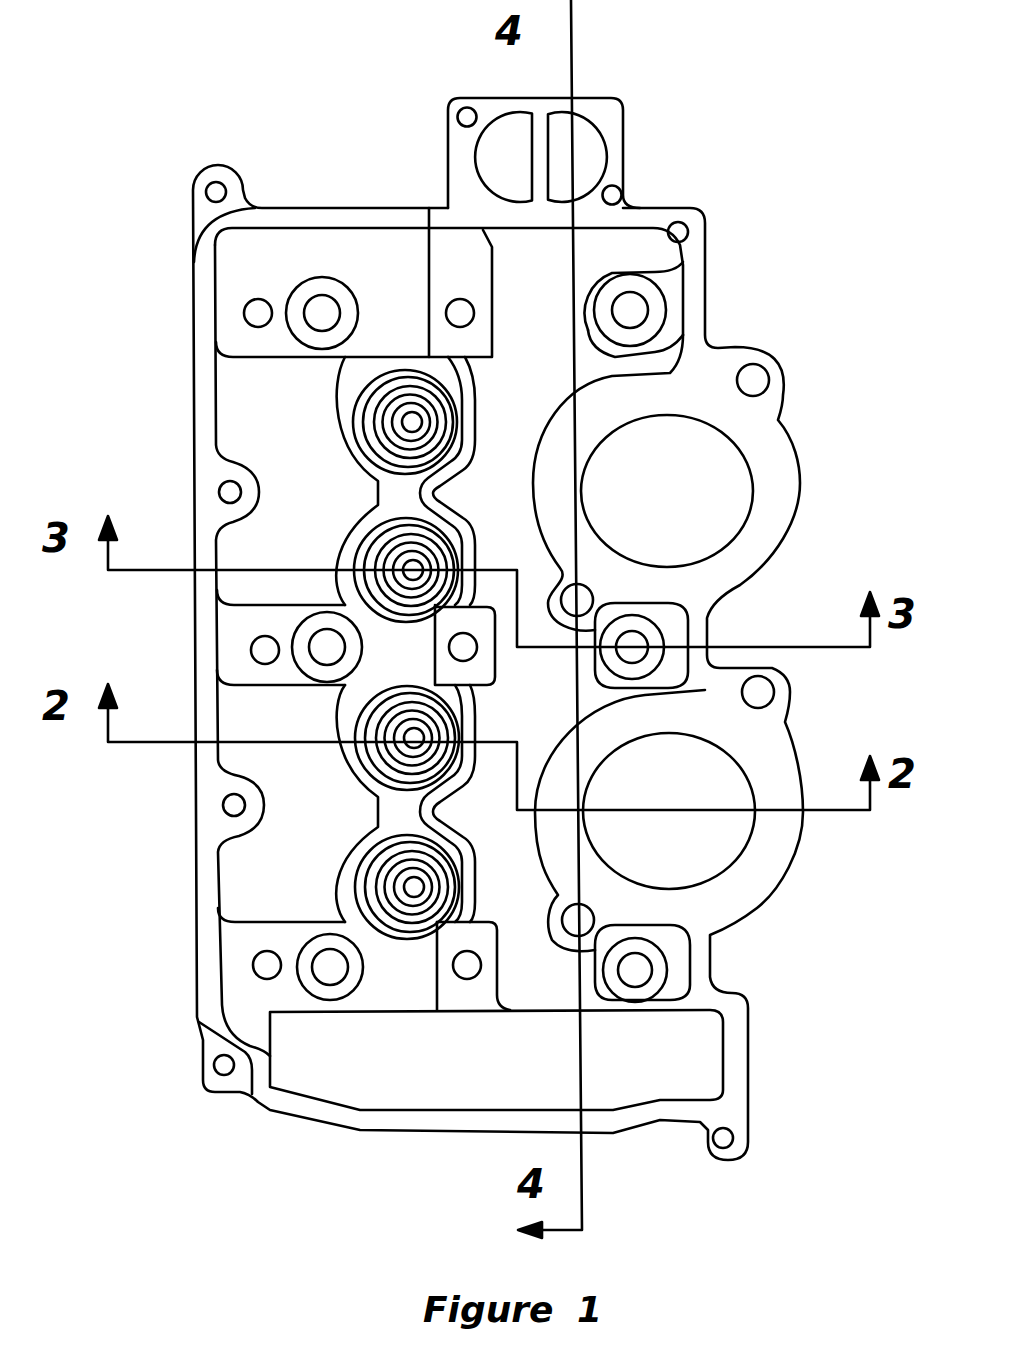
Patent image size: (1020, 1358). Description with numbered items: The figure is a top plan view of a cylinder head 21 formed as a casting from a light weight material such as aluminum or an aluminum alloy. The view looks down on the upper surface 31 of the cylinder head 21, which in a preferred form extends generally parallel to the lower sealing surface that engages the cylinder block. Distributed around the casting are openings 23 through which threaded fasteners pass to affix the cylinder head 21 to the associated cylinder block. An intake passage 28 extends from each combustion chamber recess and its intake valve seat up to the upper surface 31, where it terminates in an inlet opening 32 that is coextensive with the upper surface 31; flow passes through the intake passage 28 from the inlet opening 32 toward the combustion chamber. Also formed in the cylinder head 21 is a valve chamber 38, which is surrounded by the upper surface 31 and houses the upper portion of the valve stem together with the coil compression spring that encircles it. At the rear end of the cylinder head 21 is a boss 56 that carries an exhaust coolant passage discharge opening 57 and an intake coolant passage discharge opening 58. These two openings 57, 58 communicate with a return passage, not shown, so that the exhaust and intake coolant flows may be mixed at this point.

The cylinder head 21 is at (822, 367).
The openings 23 is at (322, 310).
The intake passage 28 is at (682, 506).
The upper surface 31 is at (200, 307).
The inlet opening 32 is at (746, 472).
The valve chamber 38 is at (228, 428).
The boss 56 is at (625, 172).
The exhaust coolant passage discharge opening 57 is at (480, 160).
The intake coolant passage discharge opening 58 is at (590, 133).